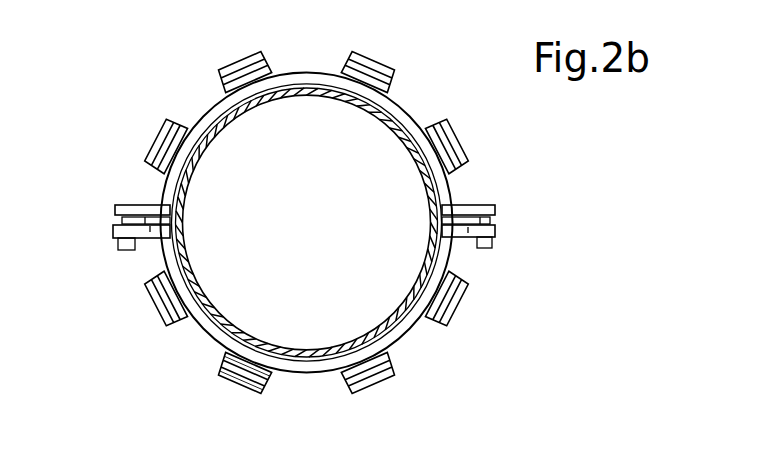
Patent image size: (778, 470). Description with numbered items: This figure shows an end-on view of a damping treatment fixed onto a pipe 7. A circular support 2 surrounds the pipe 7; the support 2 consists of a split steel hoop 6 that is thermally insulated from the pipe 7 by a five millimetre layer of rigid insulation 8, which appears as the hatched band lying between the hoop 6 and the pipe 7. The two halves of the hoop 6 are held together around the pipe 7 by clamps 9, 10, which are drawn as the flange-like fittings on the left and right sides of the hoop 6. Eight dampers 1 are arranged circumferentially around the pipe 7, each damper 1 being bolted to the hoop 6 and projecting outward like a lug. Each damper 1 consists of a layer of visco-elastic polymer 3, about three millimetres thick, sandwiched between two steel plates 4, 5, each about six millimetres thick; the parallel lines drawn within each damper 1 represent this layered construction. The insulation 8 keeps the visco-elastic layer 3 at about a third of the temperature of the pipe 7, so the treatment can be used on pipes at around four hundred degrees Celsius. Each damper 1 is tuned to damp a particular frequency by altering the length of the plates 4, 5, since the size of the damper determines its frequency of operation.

The damper 1 is at (373, 383).
The circular support 2 is at (413, 113).
The layer of visco-elastic polymer 3 is at (270, 385).
The steel plate 4 is at (220, 366).
The steel plate 5 is at (219, 360).
The split steel hoop 6 is at (200, 124).
The pipe 7 is at (255, 110).
The layer of rigid insulation 8 is at (195, 140).
The clamp 9 is at (115, 209).
The clamp 10 is at (496, 232).